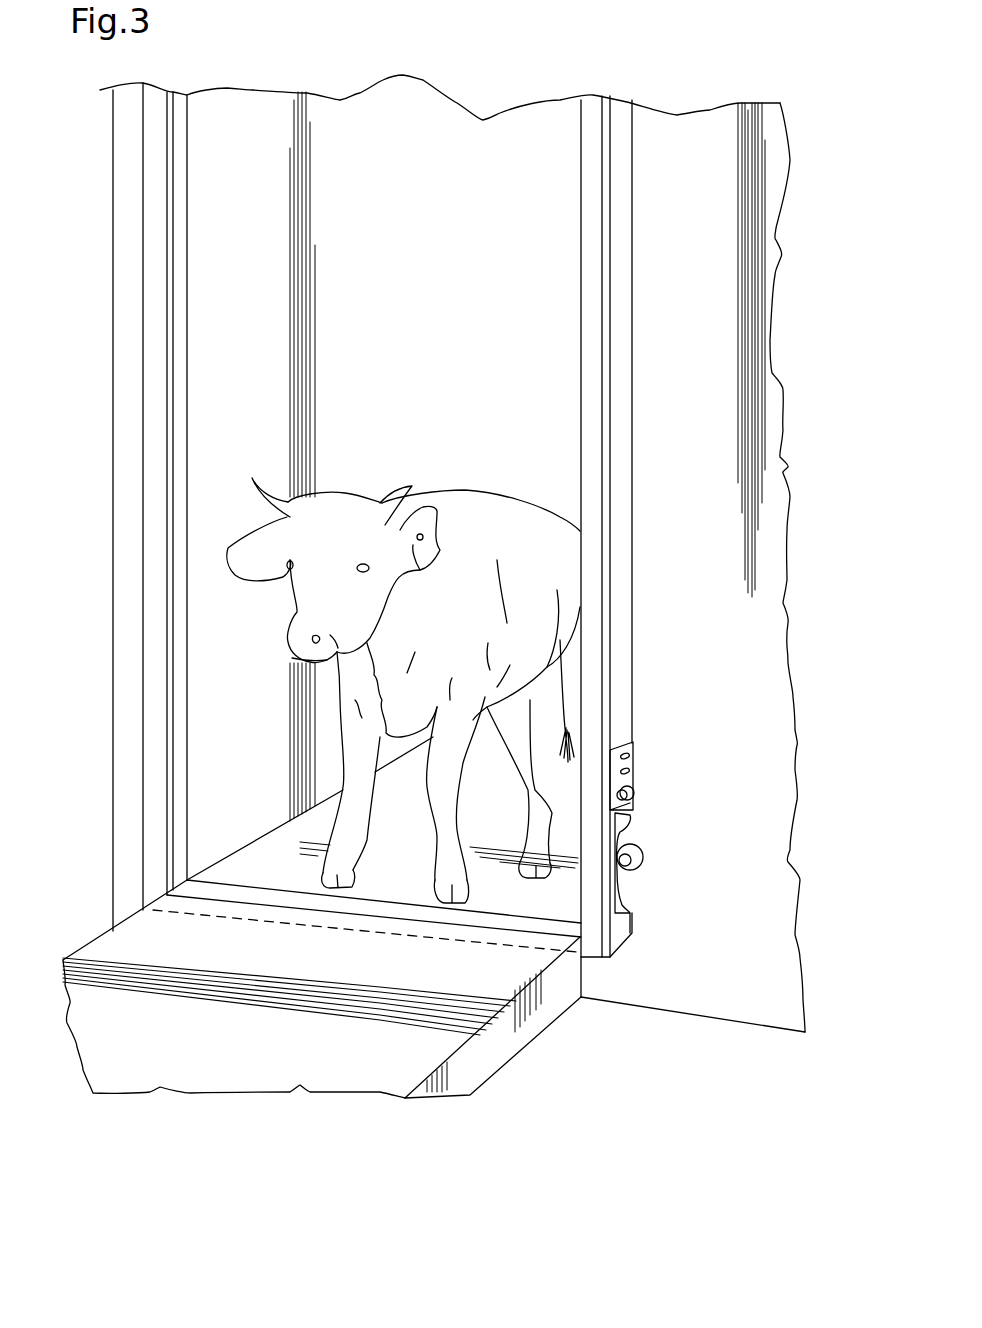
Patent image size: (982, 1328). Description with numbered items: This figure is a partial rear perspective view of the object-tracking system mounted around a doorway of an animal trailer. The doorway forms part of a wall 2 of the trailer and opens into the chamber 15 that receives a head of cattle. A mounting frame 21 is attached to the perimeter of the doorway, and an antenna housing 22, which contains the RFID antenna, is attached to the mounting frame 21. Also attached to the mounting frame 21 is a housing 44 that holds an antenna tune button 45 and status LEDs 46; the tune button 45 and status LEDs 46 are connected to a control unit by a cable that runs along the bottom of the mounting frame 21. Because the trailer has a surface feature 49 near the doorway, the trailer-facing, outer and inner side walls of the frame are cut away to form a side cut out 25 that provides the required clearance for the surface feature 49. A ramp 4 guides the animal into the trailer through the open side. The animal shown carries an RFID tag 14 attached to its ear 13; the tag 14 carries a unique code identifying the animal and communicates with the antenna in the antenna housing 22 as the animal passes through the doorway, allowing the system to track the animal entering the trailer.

The wall 2 is at (688, 160).
The ramp 4 is at (433, 1047).
The ear 13 is at (492, 493).
The RFID tag 14 is at (435, 546).
The chamber 15 is at (410, 137).
The mounting frame 21 is at (622, 358).
The antenna housing 22 is at (580, 955).
The side cut out 25 is at (620, 912).
The housing 44 is at (637, 745).
The antenna tune button 45 is at (637, 797).
The status LEDs 46 is at (637, 752).
The surface feature 49 is at (638, 852).